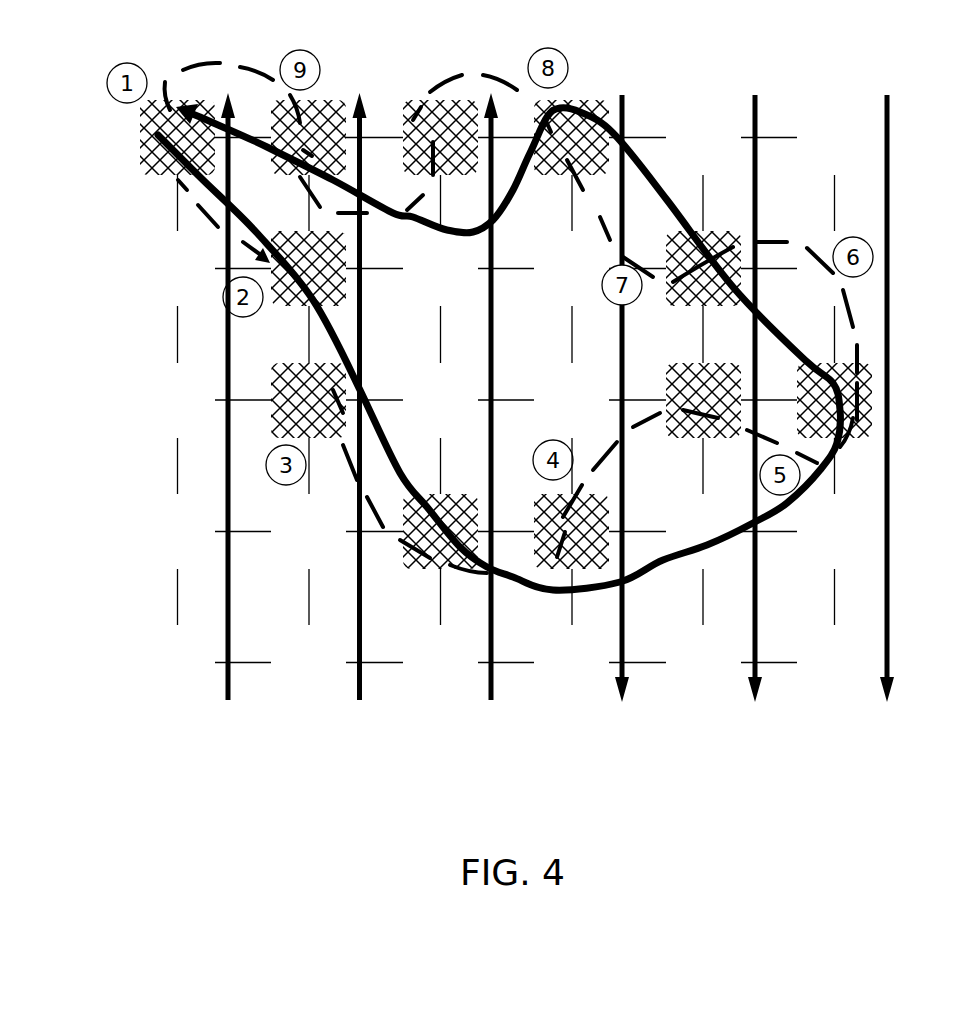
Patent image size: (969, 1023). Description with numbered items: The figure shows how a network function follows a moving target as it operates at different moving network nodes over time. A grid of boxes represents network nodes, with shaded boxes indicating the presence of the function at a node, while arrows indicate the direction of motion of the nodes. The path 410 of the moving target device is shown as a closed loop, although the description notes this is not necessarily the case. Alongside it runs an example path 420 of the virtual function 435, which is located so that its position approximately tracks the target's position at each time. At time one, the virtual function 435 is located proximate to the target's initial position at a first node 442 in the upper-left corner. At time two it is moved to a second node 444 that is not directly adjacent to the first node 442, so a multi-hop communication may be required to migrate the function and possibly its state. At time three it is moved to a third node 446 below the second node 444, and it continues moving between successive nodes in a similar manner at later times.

The path of moving target device 410 is at (210, 277).
The path of virtual function 420 is at (519, 595).
The virtual function 435 is at (150, 163).
The first node 442 is at (128, 136).
The second node 444 is at (262, 318).
The third node 446 is at (262, 447).